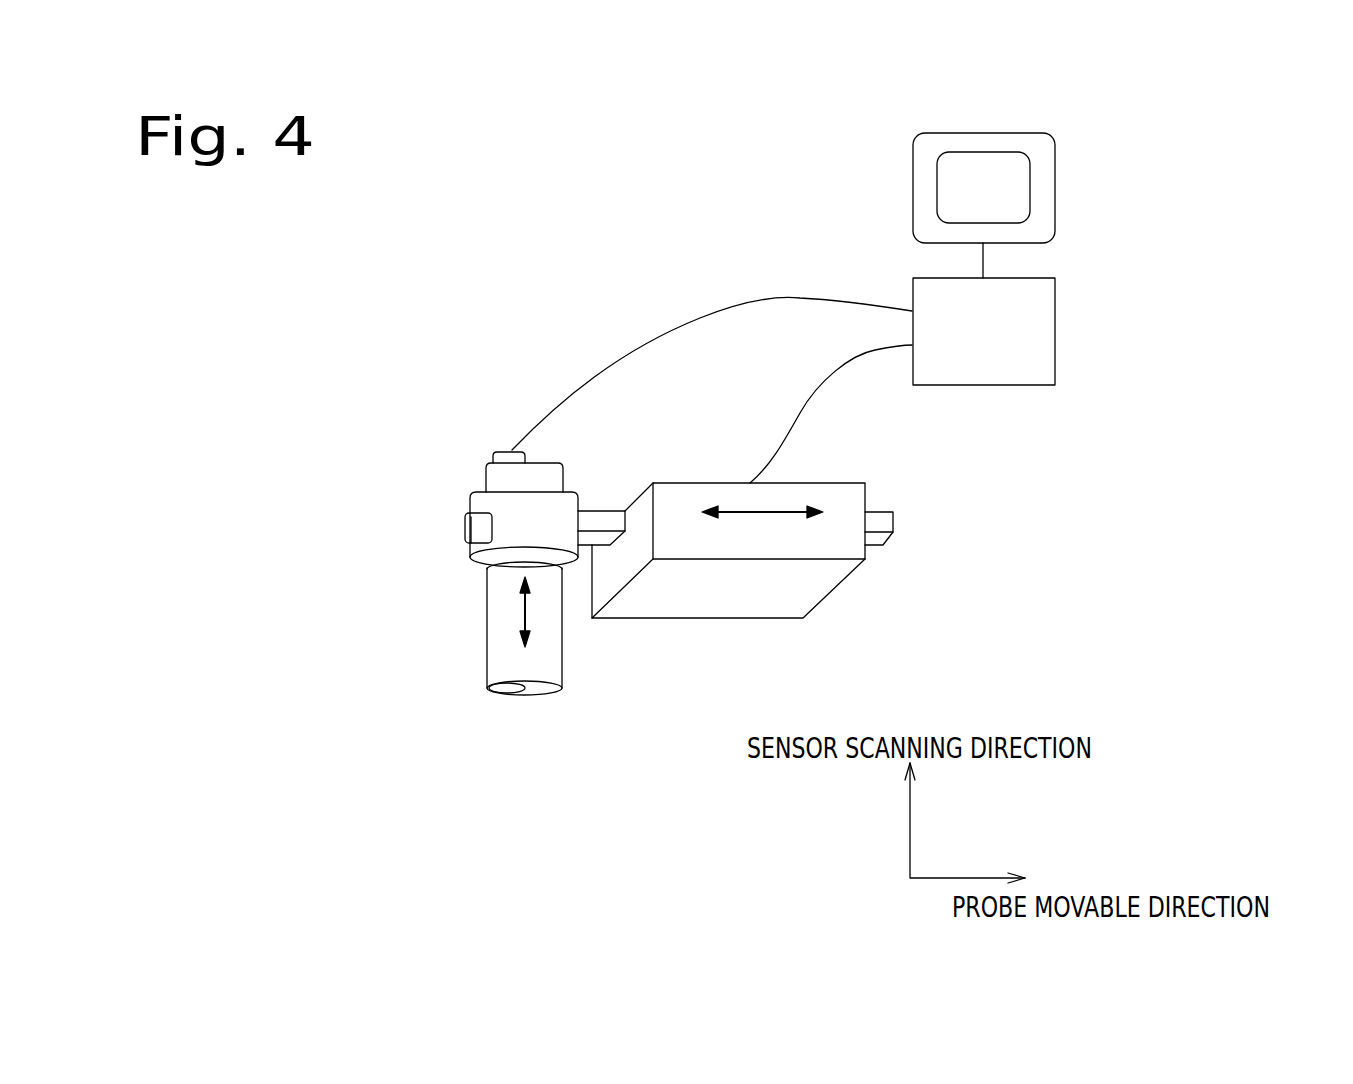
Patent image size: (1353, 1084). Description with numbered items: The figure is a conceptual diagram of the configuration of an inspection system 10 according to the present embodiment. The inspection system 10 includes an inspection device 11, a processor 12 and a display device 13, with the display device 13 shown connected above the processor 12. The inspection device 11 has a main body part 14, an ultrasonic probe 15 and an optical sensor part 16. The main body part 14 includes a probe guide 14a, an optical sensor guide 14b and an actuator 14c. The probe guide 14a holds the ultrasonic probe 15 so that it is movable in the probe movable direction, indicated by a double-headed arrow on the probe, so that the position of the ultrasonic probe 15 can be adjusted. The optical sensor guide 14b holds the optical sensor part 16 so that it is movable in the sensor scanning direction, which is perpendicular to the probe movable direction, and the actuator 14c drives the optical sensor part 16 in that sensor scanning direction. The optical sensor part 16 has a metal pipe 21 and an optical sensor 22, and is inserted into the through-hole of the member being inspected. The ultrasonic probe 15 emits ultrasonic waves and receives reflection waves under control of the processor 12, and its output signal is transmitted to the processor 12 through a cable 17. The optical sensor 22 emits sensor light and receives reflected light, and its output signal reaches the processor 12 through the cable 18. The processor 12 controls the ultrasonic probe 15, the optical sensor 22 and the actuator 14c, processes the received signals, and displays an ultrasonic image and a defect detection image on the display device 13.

The inspection system 10 is at (1157, 188).
The inspection device 11 is at (405, 372).
The processor 12 is at (1055, 327).
The display device 13 is at (1055, 188).
The main body part 14 is at (417, 529).
The probe guide 14a is at (893, 522).
The optical sensor guide 14b is at (470, 565).
The actuator 14c is at (470, 498).
The ultrasonic probe 15 is at (757, 610).
The optical sensor part 16 is at (366, 668).
The cable 17 is at (802, 415).
The cable 18 is at (667, 339).
The metal pipe 21 is at (537, 692).
The optical sensor 22 is at (507, 728).